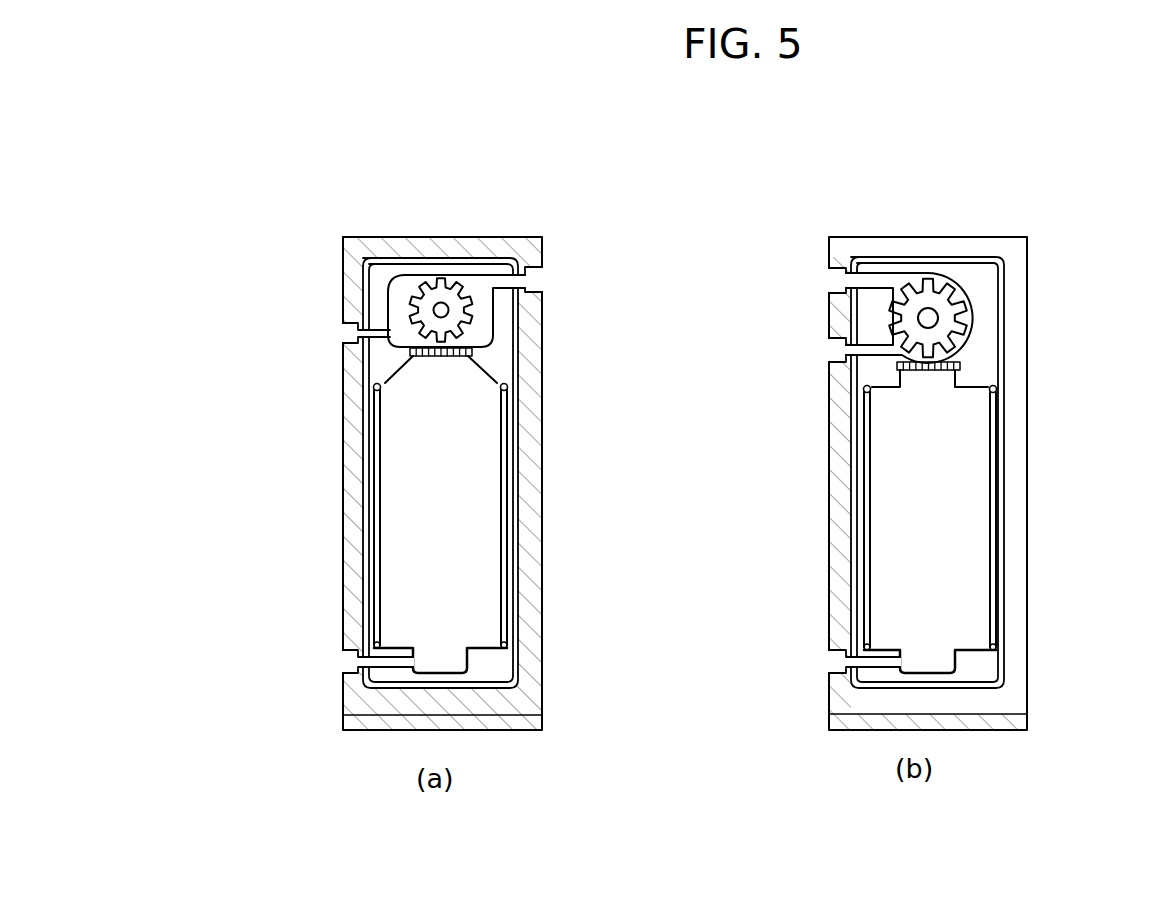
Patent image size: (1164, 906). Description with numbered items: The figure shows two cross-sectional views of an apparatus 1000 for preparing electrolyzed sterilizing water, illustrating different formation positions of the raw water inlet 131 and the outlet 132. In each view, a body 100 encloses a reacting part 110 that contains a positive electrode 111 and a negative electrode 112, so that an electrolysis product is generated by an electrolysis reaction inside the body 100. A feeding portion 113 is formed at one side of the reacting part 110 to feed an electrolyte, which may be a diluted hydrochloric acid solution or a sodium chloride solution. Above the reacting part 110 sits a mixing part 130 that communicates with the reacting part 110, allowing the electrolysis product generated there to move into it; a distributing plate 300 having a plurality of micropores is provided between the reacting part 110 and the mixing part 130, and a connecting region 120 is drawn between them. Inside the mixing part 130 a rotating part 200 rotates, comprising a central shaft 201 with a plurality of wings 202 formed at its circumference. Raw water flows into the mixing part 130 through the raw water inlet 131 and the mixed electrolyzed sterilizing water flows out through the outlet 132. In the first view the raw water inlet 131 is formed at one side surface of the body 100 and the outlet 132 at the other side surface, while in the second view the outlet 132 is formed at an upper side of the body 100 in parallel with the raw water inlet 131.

In FIG. 5A, the fluid supply apparatus 1000 is at (297, 201).
In FIG. 5B, the fluid supply apparatus 1000 is at (792, 203).
In FIG. 5A, the body 100 is at (410, 243).
In FIG. 5B, the body 100 is at (878, 245).
In FIG. 5A, the reacting part 110 is at (474, 529).
In FIG. 5B, the reacting part 110 is at (951, 530).
In FIG. 5A, the positive electrode 111 is at (527, 517).
In FIG. 5B, the positive electrode 111 is at (1010, 519).
In FIG. 5A, the negative electrode 112 is at (438, 506).
In FIG. 5B, the negative electrode 112 is at (915, 535).
In FIG. 5A, the feeding portion 113 is at (352, 663).
In FIG. 5B, the feeding portion 113 is at (838, 663).
In FIG. 5A, the inlet funnel 120 is at (440, 361).
In FIG. 5B, the inlet funnel 120 is at (897, 368).
In FIG. 5A, the mixing part 130 is at (407, 293).
In FIG. 5B, the mixing part 130 is at (918, 284).
In FIG. 5A, the raw water inlet 131 is at (353, 333).
In FIG. 5B, the raw water inlet 131 is at (838, 351).
In FIG. 5A, the outlet 132 is at (530, 281).
In FIG. 5B, the outlet 132 is at (838, 278).
In FIG. 5A, the rotating part 200 is at (501, 243).
In FIG. 5B, the rotating part 200 is at (1023, 308).
In FIG. 5A, the central shaft 201 is at (442, 310).
In FIG. 5B, the central shaft 201 is at (934, 316).
In FIG. 5A, the wings 202 is at (467, 292).
In FIG. 5B, the wings 202 is at (960, 317).
In FIG. 5A, the distributing plate 300 is at (472, 352).
In FIG. 5B, the distributing plate 300 is at (960, 366).